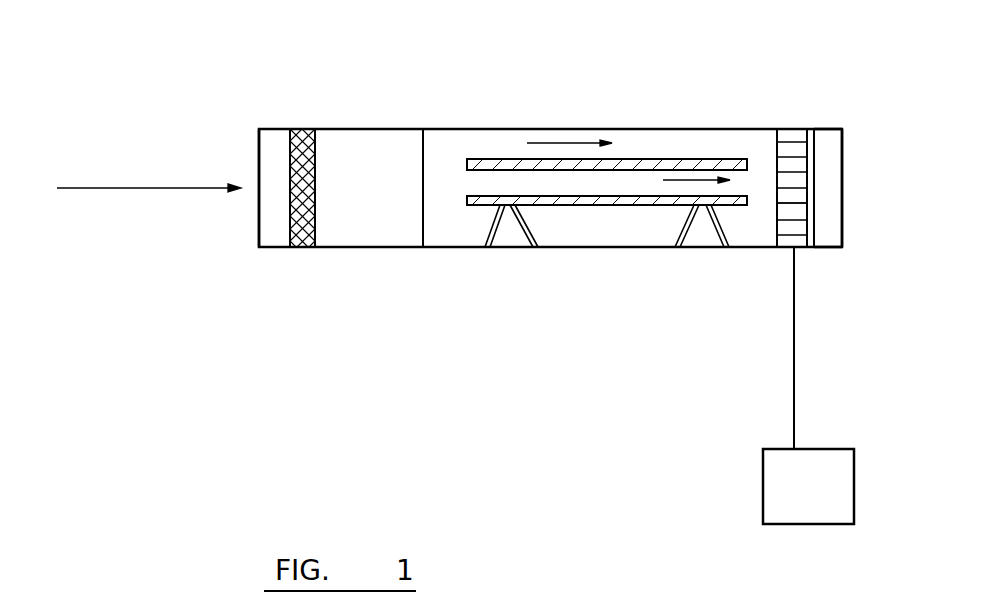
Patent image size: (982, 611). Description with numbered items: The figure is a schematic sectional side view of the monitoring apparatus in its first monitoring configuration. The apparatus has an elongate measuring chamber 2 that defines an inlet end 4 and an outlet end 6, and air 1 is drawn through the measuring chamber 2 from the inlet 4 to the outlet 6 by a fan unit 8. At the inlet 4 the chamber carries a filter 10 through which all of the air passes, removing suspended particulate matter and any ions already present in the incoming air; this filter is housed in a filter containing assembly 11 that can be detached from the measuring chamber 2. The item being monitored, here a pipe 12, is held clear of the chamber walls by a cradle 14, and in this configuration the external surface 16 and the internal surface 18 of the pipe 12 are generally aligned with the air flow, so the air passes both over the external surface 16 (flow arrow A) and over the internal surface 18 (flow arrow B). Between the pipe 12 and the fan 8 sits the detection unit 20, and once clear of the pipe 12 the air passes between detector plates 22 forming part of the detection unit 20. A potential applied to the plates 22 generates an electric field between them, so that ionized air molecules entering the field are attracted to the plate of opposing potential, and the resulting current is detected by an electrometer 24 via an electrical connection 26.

The air 1 is at (147, 190).
The measuring chamber 2 is at (557, 128).
The inlet end 4 is at (240, 138).
The outlet end 6 is at (843, 146).
The fan unit 8 is at (826, 247).
The filter 10 is at (302, 240).
The filter containing assembly 11 is at (381, 128).
The pipe 12 is at (640, 205).
The cradle 14 is at (513, 257).
The external surface 16 is at (673, 159).
The internal surface 18 is at (500, 190).
The detection unit 20 is at (792, 128).
The detector plates 22 is at (800, 212).
The electrometer 24 is at (773, 482).
The electrical connection 26 is at (795, 348).